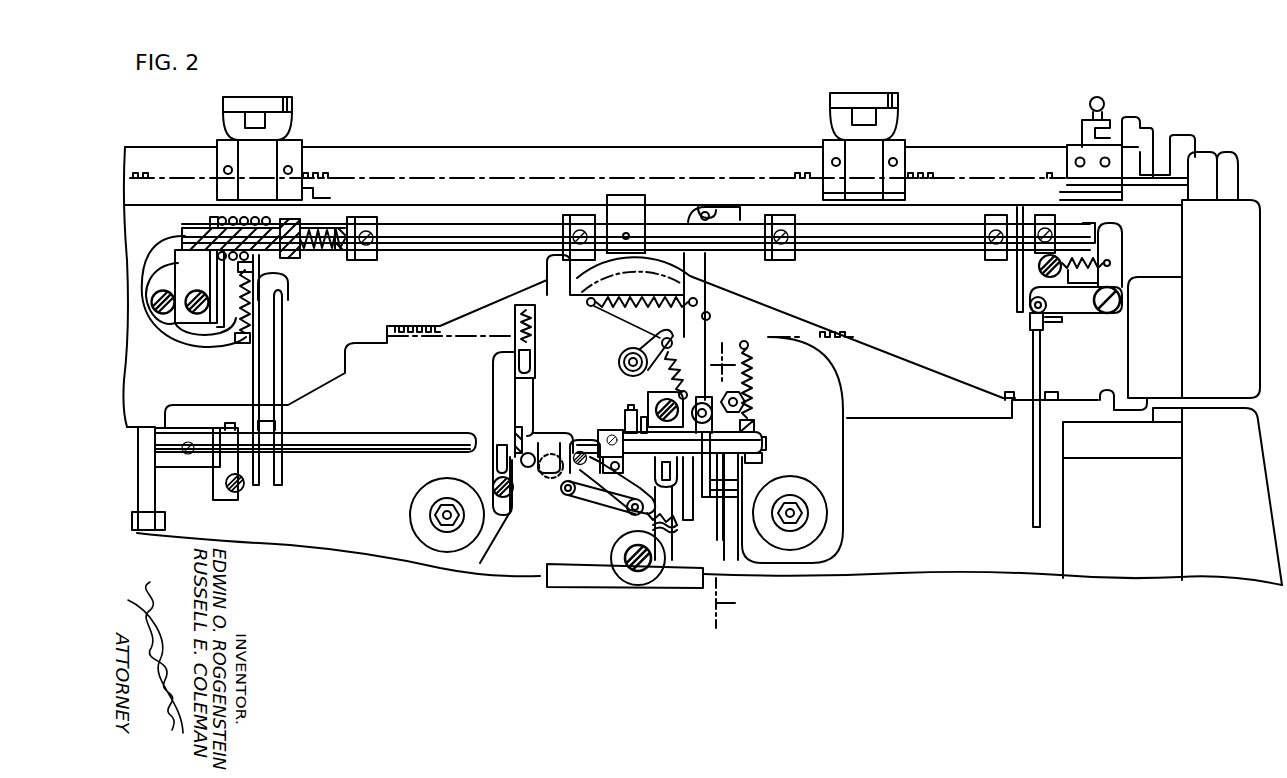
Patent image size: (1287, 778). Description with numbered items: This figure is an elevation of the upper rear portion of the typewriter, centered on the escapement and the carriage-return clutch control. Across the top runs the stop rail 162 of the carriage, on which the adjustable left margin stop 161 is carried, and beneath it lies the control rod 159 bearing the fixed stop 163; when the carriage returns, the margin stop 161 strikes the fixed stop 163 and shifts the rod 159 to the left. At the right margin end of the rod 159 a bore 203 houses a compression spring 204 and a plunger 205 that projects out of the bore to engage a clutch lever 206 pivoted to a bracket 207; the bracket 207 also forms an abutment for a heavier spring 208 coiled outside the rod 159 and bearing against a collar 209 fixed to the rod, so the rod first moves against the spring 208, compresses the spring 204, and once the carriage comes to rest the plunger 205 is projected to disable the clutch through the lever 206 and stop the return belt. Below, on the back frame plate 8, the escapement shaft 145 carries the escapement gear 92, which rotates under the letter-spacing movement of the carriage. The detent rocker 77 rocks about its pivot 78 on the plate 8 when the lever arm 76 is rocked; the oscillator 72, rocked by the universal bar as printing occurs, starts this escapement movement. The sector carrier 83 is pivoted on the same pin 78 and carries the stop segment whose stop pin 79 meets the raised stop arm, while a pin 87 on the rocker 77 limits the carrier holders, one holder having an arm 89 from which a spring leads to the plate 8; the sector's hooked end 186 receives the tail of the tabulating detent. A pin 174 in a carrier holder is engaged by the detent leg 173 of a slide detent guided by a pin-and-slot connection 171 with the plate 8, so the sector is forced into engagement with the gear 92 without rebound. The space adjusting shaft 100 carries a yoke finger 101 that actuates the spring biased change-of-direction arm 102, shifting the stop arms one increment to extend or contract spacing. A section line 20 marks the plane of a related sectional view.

The back frame plate 8 is at (765, 340).
The center line / plate 20 is at (711, 365).
The oscillator 72 is at (692, 493).
The lever arm 76 is at (697, 473).
The detent rocker 77 is at (614, 492).
The pivot pin 78 is at (577, 458).
The stop pin 79 is at (630, 453).
The sector carrier 83 is at (592, 500).
The pin 87 is at (557, 478).
The arm 89 is at (542, 437).
The escapement gear 92 is at (713, 323).
The space adjusting shaft 100 is at (392, 427).
The yoke finger 101 is at (627, 410).
The change-of-direction arm 102 is at (662, 396).
The escapement shaft 145 is at (628, 356).
The control rod 159 is at (527, 245).
The left margin stop 161 is at (890, 196).
The stop rail 162 is at (690, 150).
The fixed stop 163 is at (627, 197).
The pin and slot connection 171 is at (498, 472).
The detent extension 173 is at (531, 422).
The pin 174 is at (530, 468).
The hooked end 186 is at (568, 494).
The bore 203 is at (322, 255).
The compression spring 204 is at (322, 238).
The plunger 205 is at (190, 232).
The clutch lever 206 is at (210, 345).
The bracket 207 is at (212, 290).
The heavier spring 208 is at (270, 222).
The collar 209 is at (285, 262).